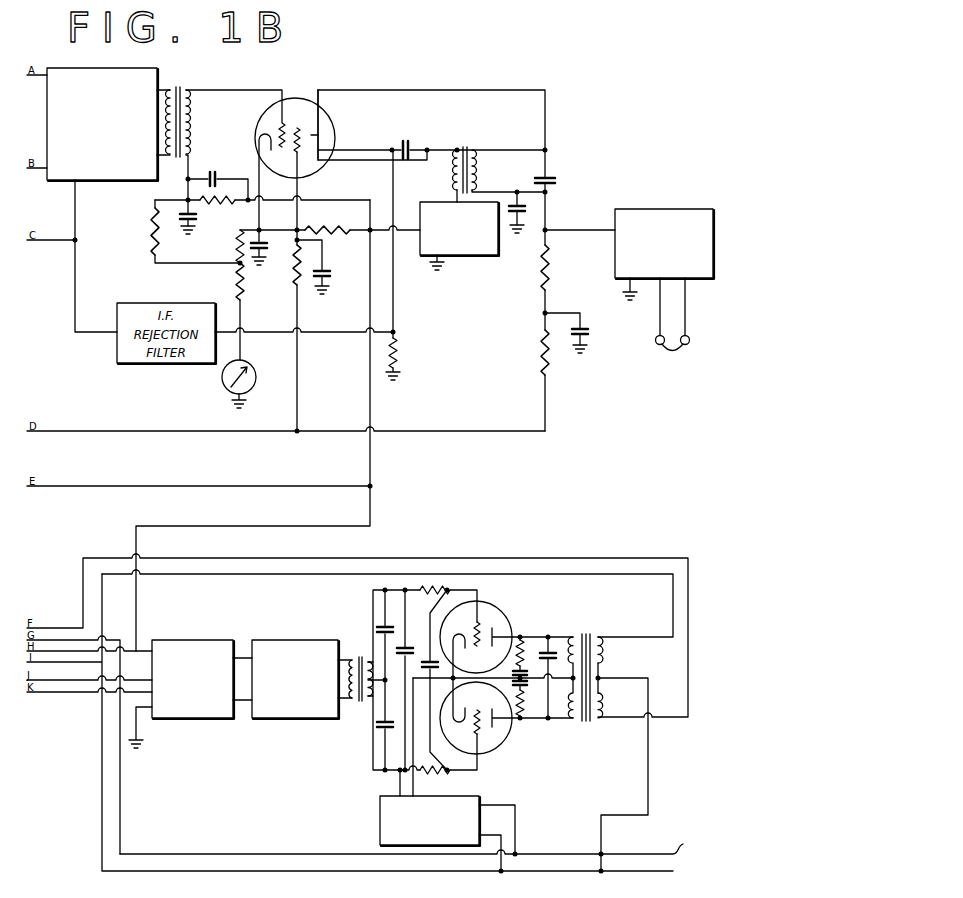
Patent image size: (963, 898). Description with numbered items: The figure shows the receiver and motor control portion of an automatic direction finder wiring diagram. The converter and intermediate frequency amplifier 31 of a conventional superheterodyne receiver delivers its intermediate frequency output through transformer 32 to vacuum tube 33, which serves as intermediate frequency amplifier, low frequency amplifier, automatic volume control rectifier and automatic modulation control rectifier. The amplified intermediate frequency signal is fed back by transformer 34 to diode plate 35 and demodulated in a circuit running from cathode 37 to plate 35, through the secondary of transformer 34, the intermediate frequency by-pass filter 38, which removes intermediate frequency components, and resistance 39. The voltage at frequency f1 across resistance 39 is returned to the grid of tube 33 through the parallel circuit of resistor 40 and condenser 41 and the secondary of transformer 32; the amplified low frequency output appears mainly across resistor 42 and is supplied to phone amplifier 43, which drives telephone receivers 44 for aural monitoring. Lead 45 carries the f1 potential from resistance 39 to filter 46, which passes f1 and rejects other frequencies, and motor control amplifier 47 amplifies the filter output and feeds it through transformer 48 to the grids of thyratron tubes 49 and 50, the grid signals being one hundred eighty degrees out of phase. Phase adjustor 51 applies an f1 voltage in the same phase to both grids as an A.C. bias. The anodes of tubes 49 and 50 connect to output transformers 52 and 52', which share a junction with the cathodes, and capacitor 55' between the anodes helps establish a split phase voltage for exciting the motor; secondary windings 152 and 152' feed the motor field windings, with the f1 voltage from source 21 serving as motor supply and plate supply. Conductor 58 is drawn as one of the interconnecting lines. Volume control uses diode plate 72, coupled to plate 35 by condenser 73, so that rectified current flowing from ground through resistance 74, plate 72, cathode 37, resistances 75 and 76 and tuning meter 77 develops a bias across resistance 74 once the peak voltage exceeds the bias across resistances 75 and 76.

The source of frequency f1 21 is at (413, 841).
The converter and intermediate frequency amplifier 31 is at (74, 68).
The transformer 32 is at (180, 85).
The vacuum tube 33 is at (293, 97).
The transformer 34 is at (460, 140).
The diode plate 35 is at (313, 168).
The cathode 37 is at (257, 139).
The intermediate frequency by-pass filter 38 is at (453, 258).
The resistance 39 is at (345, 245).
The resistor 40 is at (216, 205).
The condenser 41 is at (220, 178).
The resistor 42 is at (535, 284).
The phone amplifier 43 is at (650, 209).
The telephone receivers 44 is at (666, 362).
The lead 45 is at (375, 525).
The filter 46 is at (191, 640).
The motor control amplifier 47 is at (290, 640).
The transformer 48 is at (355, 705).
The thyratron tube 49 is at (503, 608).
The thyratron tube 50 is at (508, 740).
The phase adjustor 51 is at (481, 797).
The output transformer 52 is at (595, 663).
The output transformer 52' is at (617, 767).
The capacitor 55' is at (558, 663).
The conductor E 58 is at (80, 488).
The diode plate 72 is at (328, 130).
The condenser 73 is at (409, 142).
The resistance 74 is at (397, 352).
The resistance 75 is at (236, 240).
The resistor 76 is at (245, 287).
The tuning meter 77 is at (256, 380).
The secondary winding 152 is at (619, 650).
The secondary winding 152' is at (621, 705).